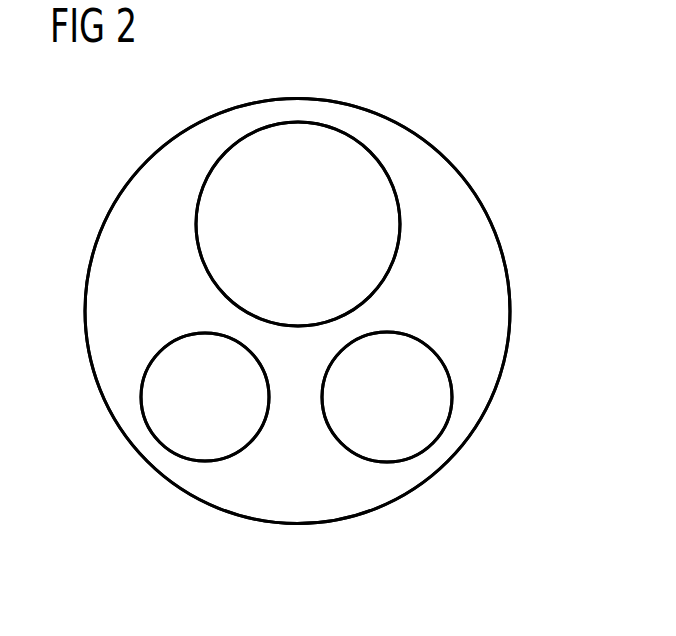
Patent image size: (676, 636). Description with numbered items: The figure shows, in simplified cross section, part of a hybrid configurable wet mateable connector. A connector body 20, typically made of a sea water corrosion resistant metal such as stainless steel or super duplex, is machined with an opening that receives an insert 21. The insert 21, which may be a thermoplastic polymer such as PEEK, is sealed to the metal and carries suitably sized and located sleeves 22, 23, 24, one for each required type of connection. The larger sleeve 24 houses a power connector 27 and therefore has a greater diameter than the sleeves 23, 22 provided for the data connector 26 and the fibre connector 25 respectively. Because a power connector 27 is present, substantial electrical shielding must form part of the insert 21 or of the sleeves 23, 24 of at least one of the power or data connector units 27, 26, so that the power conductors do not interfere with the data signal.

The connector body 20 is at (354, 523).
The insert 21 is at (483, 218).
The sleeve 22 is at (437, 438).
The sleeve 23 is at (173, 457).
The sleeve 24 is at (335, 128).
The fibre connector 25 is at (440, 400).
The data connector 26 is at (150, 378).
The power connector 27 is at (257, 143).